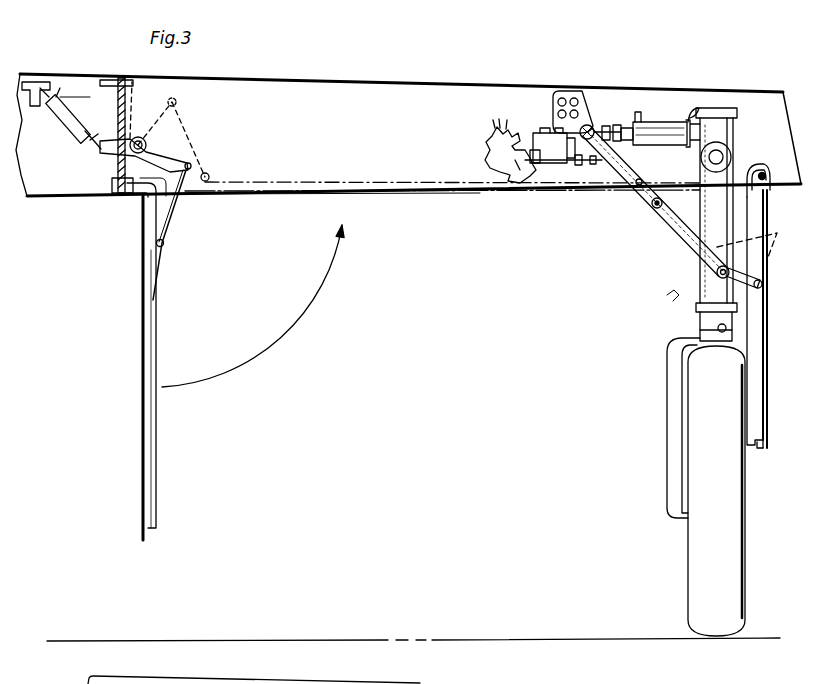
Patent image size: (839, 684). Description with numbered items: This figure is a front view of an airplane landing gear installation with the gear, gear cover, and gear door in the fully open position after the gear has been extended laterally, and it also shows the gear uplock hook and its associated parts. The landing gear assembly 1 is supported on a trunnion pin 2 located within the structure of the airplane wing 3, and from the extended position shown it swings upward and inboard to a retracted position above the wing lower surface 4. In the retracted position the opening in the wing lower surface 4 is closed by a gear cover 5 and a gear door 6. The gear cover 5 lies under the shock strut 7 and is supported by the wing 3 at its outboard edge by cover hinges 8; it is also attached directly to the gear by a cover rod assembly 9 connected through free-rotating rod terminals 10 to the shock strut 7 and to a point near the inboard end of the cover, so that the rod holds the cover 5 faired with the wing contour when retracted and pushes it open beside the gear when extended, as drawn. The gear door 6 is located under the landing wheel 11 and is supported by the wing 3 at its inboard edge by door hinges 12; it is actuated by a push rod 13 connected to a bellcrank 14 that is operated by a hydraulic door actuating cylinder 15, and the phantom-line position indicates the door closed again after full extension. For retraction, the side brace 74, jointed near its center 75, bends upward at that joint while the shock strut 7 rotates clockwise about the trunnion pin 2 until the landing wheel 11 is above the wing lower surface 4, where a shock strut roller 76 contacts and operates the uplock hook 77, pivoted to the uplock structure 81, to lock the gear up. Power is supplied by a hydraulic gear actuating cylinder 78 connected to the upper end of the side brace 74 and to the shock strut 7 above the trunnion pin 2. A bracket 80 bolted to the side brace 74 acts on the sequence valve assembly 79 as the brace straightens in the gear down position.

The landing gear assembly 1 is at (660, 352).
The trunnion pin 2 is at (725, 153).
The airplane wing 3 is at (535, 91).
The wing lower surface 4 is at (86, 199).
The gear cover 5 is at (763, 331).
The gear door 6 is at (142, 421).
The shock strut 7 is at (702, 208).
The cover hinges 8 is at (756, 170).
The cover rod assembly 9 is at (757, 289).
The rod terminals 10 is at (771, 240).
The landing wheel 11 is at (728, 482).
The door hinges 12 is at (172, 222).
The push rod 13 is at (188, 196).
The bellcrank 14 is at (147, 143).
The hydraulic door actuating cylinder 15 is at (77, 124).
The side brace 74 is at (636, 200).
The joint 75 is at (657, 209).
The shock strut roller 76 is at (719, 327).
The uplock hook 77 is at (481, 172).
The hydraulic gear actuating cylinder 78 is at (671, 121).
The sequence valve assembly 79 is at (531, 134).
The bracket 80 is at (601, 162).
The uplock structure 81 is at (482, 146).